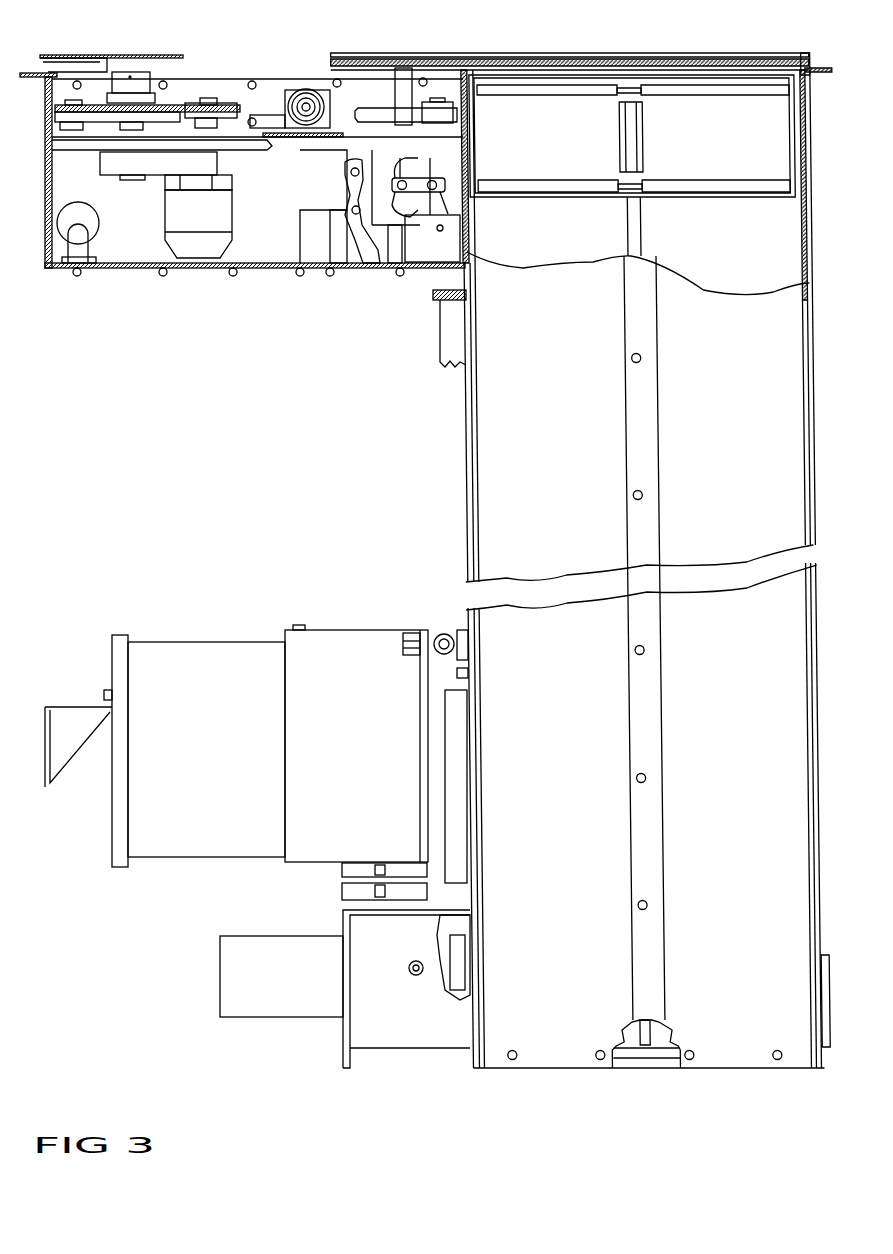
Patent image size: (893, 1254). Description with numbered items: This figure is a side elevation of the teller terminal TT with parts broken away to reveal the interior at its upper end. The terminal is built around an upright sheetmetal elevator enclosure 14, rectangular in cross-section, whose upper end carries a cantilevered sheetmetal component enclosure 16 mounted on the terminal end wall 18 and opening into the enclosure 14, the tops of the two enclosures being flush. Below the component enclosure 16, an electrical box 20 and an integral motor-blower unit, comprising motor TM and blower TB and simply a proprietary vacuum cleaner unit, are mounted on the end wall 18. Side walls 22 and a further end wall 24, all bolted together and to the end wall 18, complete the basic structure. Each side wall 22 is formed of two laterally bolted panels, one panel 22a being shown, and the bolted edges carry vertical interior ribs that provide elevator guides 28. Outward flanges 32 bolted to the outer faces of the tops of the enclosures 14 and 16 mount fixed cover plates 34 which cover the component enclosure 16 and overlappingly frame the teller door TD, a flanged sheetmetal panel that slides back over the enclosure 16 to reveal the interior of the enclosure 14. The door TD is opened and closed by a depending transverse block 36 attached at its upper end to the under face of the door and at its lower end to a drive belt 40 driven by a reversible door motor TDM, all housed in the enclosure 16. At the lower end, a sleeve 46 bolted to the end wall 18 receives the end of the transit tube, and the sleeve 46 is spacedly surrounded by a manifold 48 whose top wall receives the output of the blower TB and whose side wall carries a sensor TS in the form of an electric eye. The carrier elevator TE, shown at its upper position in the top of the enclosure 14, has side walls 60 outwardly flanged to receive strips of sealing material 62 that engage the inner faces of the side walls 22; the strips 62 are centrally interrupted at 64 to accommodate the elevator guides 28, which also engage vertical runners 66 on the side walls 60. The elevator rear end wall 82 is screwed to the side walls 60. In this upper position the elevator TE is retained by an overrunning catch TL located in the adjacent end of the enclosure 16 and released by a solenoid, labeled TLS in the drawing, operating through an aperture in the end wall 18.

The elevator enclosure 14 is at (732, 657).
The component enclosure 16 is at (137, 222).
The end wall 18 is at (461, 525).
The electrical box 20 is at (466, 792).
The side wall 22 is at (788, 267).
The panel 22a is at (488, 460).
The end wall 24 is at (812, 818).
The elevator guide 28 is at (640, 245).
The outward flange 32 is at (47, 72).
The cover plate 34 is at (165, 55).
The transverse block 36 is at (396, 86).
The drive belt 40 is at (235, 105).
The sleeve 46 is at (445, 950).
The manifold 48 is at (410, 1045).
The elevator side wall 60 is at (695, 174).
The sealing material strip 62 is at (515, 180).
The central interruption 64 is at (625, 85).
The vertical runner 66 is at (645, 125).
The elevator rear end wall 82 is at (797, 158).
The teller terminal door TD is at (360, 62).
The teller carrier elevator TE is at (716, 142).
The overrunning catch TL is at (478, 185).
The latch switch TLS is at (318, 190).
The door motor TDM is at (203, 247).
The teller terminal TT is at (305, 437).
The motor TM is at (220, 763).
The blower TB is at (367, 763).
The sensor TS is at (410, 975).